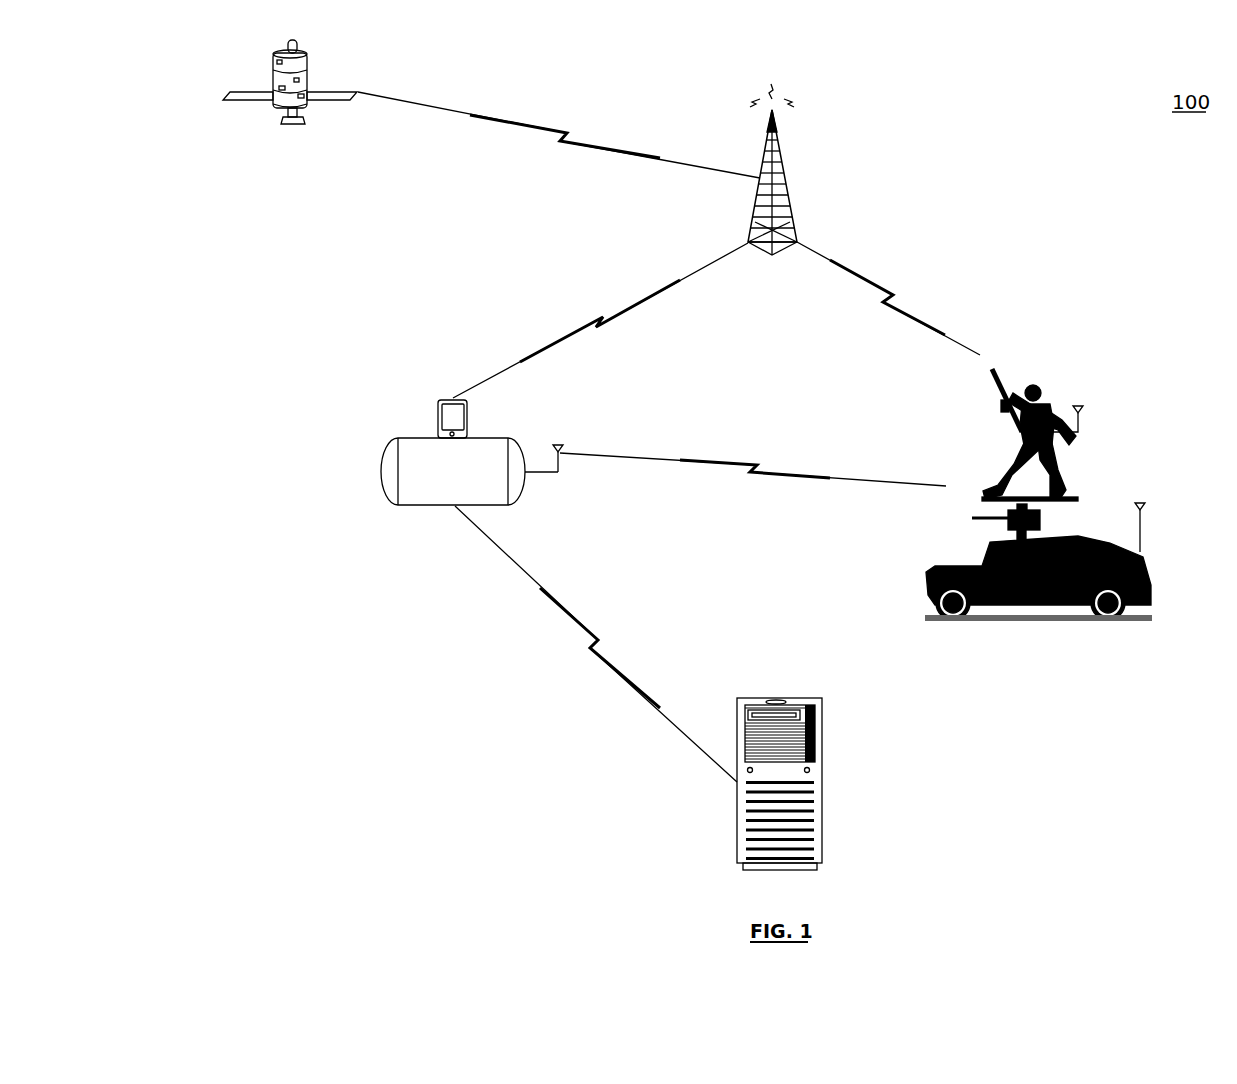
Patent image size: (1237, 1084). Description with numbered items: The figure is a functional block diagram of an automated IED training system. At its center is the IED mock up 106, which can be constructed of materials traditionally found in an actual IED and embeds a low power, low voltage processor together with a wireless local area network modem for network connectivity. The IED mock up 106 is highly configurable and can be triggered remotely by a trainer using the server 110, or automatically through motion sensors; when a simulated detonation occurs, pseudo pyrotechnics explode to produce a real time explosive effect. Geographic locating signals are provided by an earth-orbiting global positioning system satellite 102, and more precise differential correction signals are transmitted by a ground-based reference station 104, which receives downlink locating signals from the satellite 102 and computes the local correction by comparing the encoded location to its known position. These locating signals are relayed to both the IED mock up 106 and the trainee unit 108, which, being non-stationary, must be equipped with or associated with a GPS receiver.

The global positioning system satellite 102 is at (262, 108).
The ground-based reference station 104 is at (780, 175).
The IED mock up 106 is at (382, 472).
The trainee unit 108 is at (1112, 452).
The server 110 is at (748, 803).